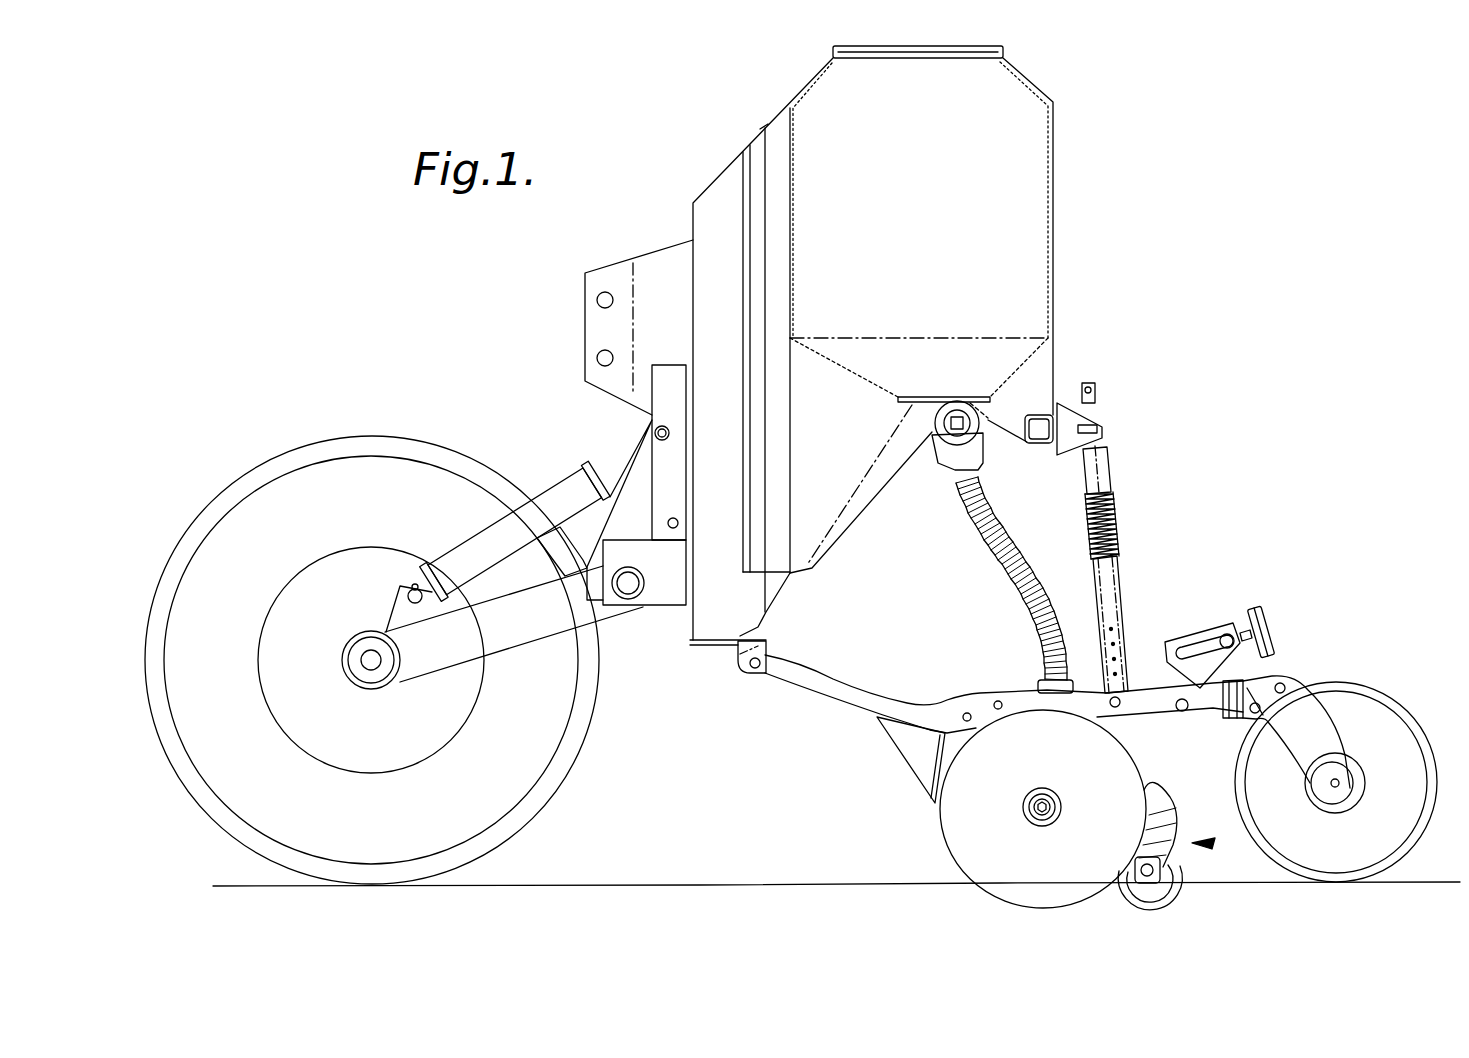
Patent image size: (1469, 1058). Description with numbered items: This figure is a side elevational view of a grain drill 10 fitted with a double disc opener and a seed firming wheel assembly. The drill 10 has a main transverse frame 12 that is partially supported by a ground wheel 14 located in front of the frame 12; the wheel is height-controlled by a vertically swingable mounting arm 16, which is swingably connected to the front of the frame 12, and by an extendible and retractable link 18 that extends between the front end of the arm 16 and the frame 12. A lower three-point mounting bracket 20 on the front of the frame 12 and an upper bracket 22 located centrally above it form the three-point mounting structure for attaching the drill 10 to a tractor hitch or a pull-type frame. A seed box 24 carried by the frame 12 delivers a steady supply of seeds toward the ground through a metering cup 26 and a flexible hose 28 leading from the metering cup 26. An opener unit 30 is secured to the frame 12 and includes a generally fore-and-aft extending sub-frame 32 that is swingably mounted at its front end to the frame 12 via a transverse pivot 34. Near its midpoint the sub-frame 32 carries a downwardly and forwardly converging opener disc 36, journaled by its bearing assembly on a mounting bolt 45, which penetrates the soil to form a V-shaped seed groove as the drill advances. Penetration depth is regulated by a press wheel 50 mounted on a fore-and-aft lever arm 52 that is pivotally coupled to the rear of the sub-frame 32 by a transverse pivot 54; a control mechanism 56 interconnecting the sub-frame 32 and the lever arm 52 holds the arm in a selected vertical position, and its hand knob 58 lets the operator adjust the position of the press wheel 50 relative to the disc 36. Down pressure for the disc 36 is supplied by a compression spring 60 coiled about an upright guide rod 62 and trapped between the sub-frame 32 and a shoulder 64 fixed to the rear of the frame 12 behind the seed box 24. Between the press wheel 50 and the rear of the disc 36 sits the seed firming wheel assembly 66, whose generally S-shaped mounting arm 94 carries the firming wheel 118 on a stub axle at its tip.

The drill 10 is at (1125, 228).
The main transverse frame 12 is at (725, 196).
The ground wheel 14 is at (320, 478).
The mounting arm 16 is at (498, 636).
The extendible and retractable link 18 is at (560, 500).
The lower 3-point mounting bracket 20 is at (633, 490).
The upper bracket 22 is at (590, 340).
The seed box 24 is at (1012, 108).
The metering cup 26 is at (957, 458).
The flexible hose 28 is at (1006, 567).
The opener unit 30 is at (815, 760).
The sub-frame 32 is at (1017, 698).
The transverse pivot 34 is at (755, 673).
The opener disc 36 is at (962, 838).
The mounting bolt 45 is at (1023, 812).
The press wheel 50 is at (1393, 735).
The lever arm 52 is at (1313, 688).
The transverse pivot 54 is at (1147, 685).
The control mechanism 56 is at (1200, 633).
The hand knob 58 is at (1272, 630).
The compression spring 60 is at (1115, 533).
The guide rod 62 is at (1097, 475).
The shoulder 64 is at (1097, 413).
The seed firming wheel assembly 66 is at (1212, 844).
The mounting arm 94 is at (1165, 803).
The firming wheel 118 is at (1165, 895).